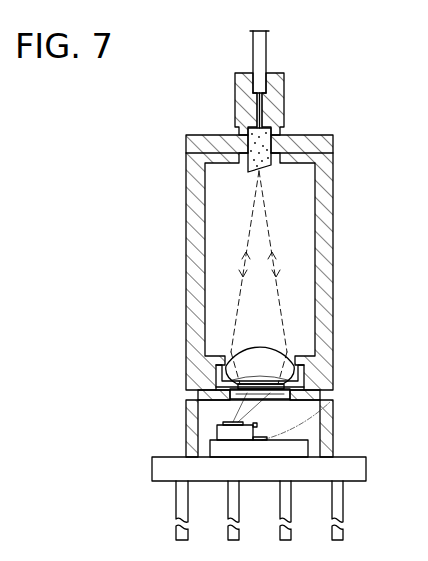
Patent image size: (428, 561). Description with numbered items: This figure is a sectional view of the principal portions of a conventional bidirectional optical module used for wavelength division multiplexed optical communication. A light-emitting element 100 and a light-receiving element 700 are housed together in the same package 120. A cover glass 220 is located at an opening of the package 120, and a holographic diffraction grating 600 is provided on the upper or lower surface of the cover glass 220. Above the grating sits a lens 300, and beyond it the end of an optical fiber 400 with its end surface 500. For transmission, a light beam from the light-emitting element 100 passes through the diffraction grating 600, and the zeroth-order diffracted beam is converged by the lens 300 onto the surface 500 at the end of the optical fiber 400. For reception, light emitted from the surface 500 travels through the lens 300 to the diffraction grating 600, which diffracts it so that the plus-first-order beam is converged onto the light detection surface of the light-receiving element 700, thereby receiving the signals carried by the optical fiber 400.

The optical fiber 400 is at (266, 47).
The surface on end of optical fiber 500 is at (280, 180).
The holographic diffraction grating 600 is at (283, 366).
The lens 300 is at (218, 372).
The cover glass 220 is at (225, 394).
The light-emitting element 100 is at (331, 398).
The package 120 is at (333, 423).
The light-receiving element 700 is at (222, 420).